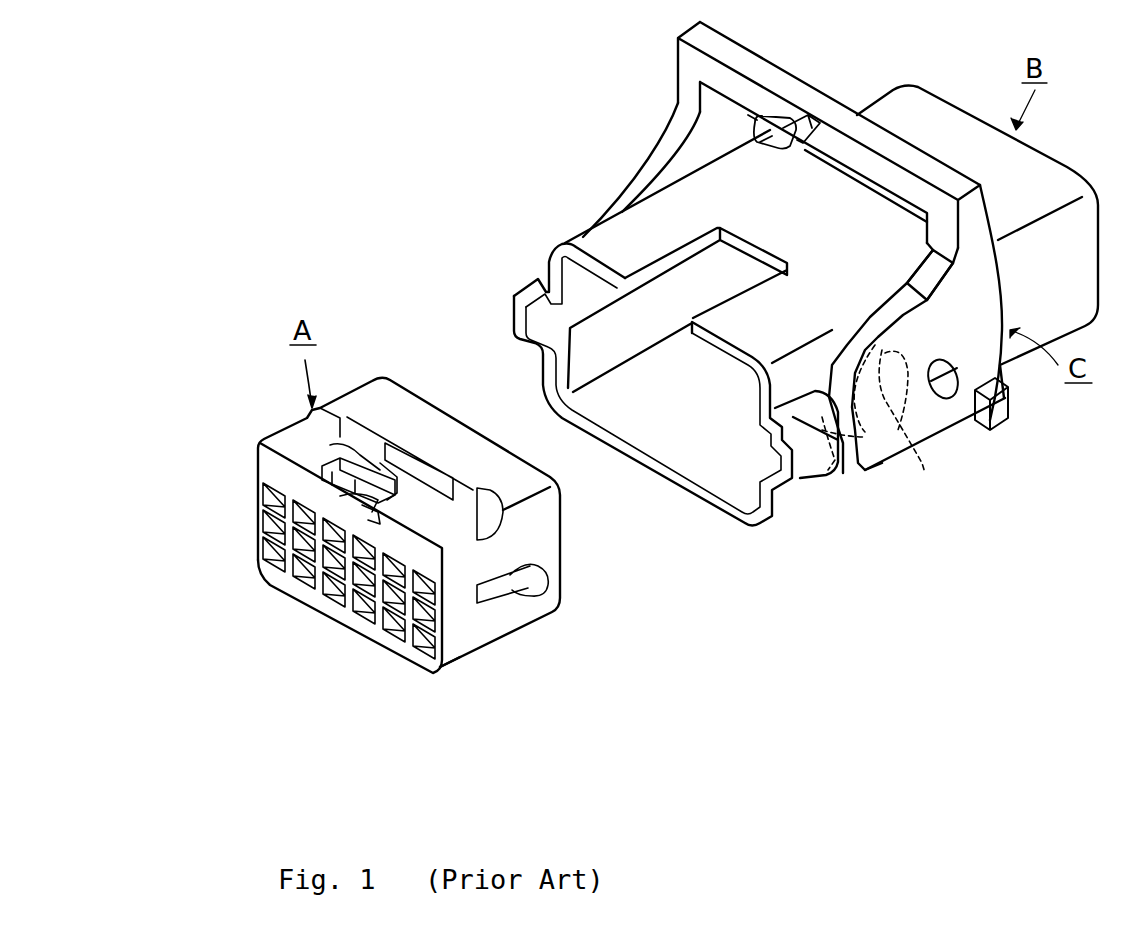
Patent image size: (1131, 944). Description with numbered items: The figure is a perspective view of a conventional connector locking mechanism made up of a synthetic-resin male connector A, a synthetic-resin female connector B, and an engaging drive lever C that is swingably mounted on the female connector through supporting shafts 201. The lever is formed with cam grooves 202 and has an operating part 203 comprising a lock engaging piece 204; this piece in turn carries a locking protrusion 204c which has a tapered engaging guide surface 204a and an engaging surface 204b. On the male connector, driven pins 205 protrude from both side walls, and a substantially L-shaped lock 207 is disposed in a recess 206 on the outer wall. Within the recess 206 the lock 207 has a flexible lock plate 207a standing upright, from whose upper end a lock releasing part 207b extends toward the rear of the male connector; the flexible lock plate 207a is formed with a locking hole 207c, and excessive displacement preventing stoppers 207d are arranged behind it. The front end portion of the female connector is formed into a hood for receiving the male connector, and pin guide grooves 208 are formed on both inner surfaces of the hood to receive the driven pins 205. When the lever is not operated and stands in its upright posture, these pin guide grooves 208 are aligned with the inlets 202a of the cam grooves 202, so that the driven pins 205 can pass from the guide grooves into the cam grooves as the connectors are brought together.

The supporting shafts 201 is at (944, 398).
The cam grooves 202 is at (897, 415).
The inlets of cam grooves 202a is at (832, 483).
The operating part 203 is at (978, 222).
The lock engaging piece 204 is at (780, 122).
The tapered engaging guide surface 204a is at (772, 133).
The engaging surface 204b is at (788, 124).
The locking protrusion 204c is at (768, 115).
The driven pins 205 is at (557, 582).
The recess 206 is at (357, 517).
The lock 207 is at (330, 508).
The flexible lock plate 207a is at (333, 510).
The lock releasing part 207b is at (327, 465).
The locking hole 207c is at (395, 470).
The excessive displacement preventing stoppers 207d is at (370, 527).
The pin guide grooves 208 is at (545, 310).